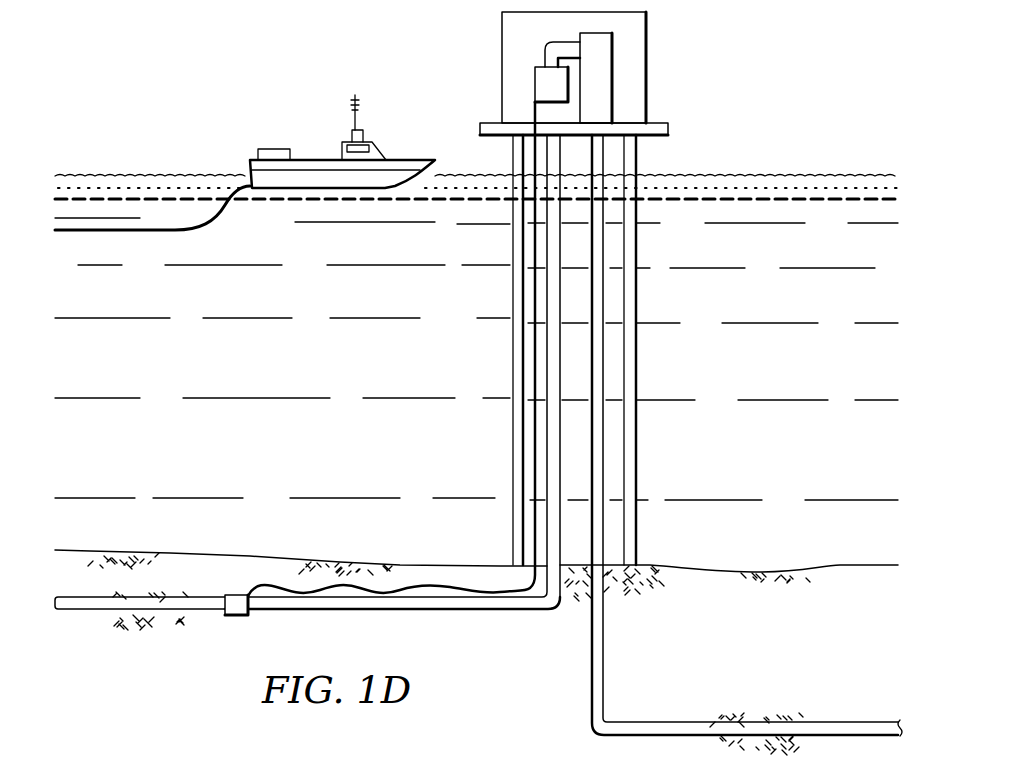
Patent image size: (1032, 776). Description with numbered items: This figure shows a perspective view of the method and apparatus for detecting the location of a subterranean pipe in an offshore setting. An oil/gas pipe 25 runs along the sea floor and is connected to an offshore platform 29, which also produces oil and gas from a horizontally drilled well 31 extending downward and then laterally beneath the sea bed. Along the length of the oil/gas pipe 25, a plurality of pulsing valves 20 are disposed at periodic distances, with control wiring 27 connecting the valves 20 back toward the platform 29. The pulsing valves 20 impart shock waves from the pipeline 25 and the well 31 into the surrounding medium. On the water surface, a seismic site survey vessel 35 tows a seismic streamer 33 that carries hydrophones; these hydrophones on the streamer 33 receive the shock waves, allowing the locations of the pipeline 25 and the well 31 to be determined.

The pulsing valve 20 is at (540, 66).
The oil/gas pipe 25 is at (445, 610).
The control wiring 27 is at (236, 596).
The offshore platform 29 is at (647, 30).
The horizontally drilled well 31 is at (590, 674).
The seismic streamer 33 is at (210, 220).
The seismic site survey vessel 35 is at (313, 160).